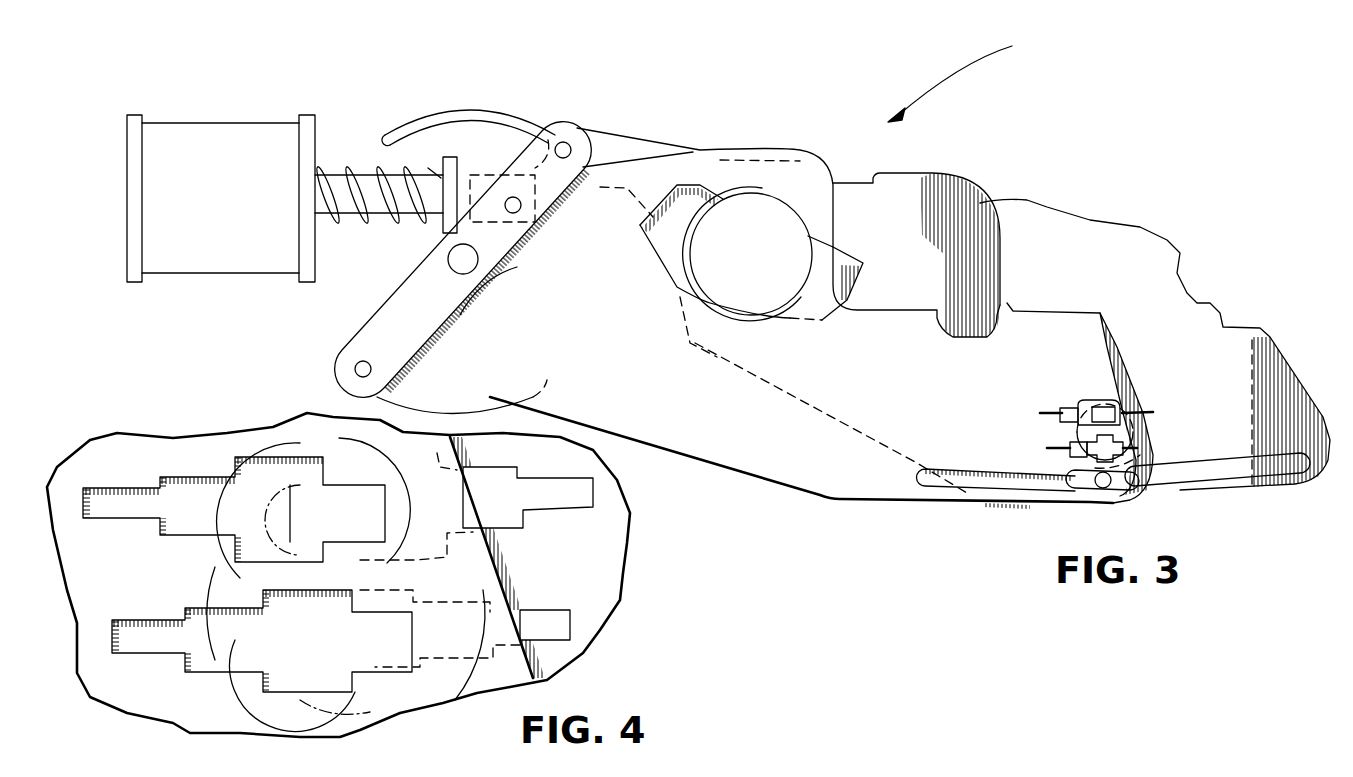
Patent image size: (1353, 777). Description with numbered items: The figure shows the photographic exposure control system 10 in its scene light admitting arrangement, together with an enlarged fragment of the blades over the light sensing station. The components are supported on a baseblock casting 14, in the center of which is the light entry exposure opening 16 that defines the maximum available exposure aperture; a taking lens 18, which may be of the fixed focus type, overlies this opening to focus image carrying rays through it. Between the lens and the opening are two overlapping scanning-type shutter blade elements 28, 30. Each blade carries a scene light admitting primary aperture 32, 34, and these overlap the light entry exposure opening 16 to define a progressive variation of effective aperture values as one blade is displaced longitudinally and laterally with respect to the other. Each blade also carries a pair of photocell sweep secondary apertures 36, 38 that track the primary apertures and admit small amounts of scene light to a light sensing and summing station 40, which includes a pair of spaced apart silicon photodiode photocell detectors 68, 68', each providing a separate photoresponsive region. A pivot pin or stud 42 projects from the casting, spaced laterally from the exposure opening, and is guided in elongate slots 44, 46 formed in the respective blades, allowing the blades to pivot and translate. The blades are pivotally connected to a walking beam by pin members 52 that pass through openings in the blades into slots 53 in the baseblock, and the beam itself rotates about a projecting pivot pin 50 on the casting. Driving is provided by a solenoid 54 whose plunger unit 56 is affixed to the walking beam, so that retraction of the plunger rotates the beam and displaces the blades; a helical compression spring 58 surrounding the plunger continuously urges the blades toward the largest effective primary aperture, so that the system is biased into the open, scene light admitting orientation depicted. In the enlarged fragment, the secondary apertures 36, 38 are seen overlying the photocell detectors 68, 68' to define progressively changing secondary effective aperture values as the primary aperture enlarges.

In FIG. 3, the photographic exposure control system 10 is at (963, 70).
In FIG. 3, the baseblock casting 14 is at (1054, 257).
In FIG. 3, the light entry exposure opening 16 is at (765, 208).
In FIG. 3, the taking lens 18 is at (730, 180).
In FIG. 3, the shutter blade element 28 is at (930, 182).
In FIG. 4, the shutter blade element 28 is at (578, 655).
In FIG. 3, the shutter blade element 30 is at (722, 465).
In FIG. 4, the shutter blade element 30 is at (460, 694).
In FIG. 3, the scene light admitting primary aperture 32 is at (845, 258).
In FIG. 3, the scene light admitting primary aperture 34 is at (690, 186).
In FIG. 3, the photocell sweep secondary apertures 36 is at (1072, 410).
In FIG. 4, the photocell sweep secondary apertures 36 is at (253, 455).
In FIG. 3, the photocell sweep secondary apertures 38 is at (1060, 445).
In FIG. 4, the photocell sweep secondary apertures 38 is at (207, 660).
In FIG. 3, the light sensing and summing station 40 is at (1140, 416).
In FIG. 4, the light sensing and summing station 40 is at (468, 470).
In FIG. 3, the pivot pin or stud 42 is at (1115, 505).
In FIG. 3, the elongate slot 44 is at (1280, 484).
In FIG. 3, the elongate slot 46 is at (1040, 486).
In FIG. 3, the pivot pin 50 is at (447, 260).
In FIG. 3, the pin members 52 is at (573, 145).
In FIG. 3, the slots 53 is at (468, 105).
In FIG. 3, the solenoid 54 is at (203, 127).
In FIG. 3, the plunger unit 56 is at (488, 177).
In FIG. 3, the helical compression spring 58 is at (346, 170).
In FIG. 3, the photocell detector 68 is at (1130, 389).
In FIG. 4, the photocell detector 68 is at (262, 520).
In FIG. 3, the photocell detector 68' is at (1145, 454).
In FIG. 4, the photocell detector 68' is at (351, 726).